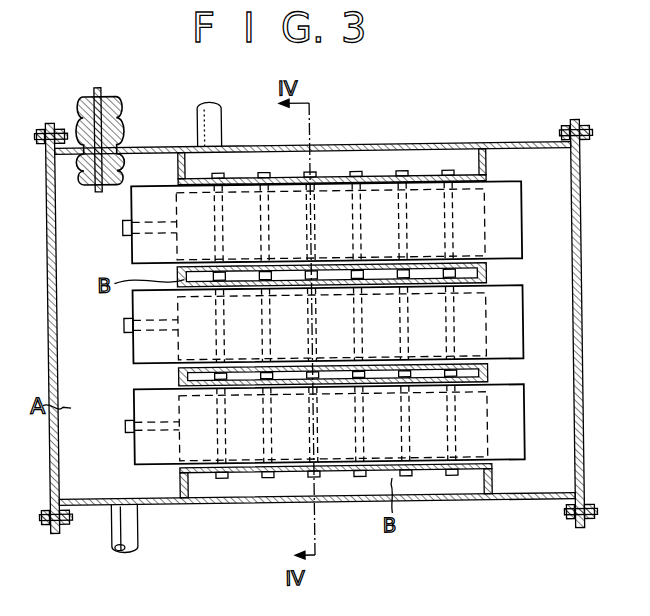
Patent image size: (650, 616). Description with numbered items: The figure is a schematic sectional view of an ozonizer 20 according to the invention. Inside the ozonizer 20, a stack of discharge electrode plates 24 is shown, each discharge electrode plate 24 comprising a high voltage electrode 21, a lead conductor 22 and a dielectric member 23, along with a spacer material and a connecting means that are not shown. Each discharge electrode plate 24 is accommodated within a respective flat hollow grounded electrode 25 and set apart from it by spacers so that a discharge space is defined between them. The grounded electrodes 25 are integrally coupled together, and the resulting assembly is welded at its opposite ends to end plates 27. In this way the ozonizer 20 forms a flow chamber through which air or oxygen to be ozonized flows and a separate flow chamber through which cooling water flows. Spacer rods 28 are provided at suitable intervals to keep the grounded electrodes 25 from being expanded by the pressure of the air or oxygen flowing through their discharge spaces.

The ozonizer 20 is at (518, 144).
The high voltage electrode 21 is at (486, 241).
The lead conductor 22 is at (124, 326).
The dielectric member 23 is at (513, 208).
The discharge electrode plate 24 is at (517, 323).
The flat hollow grounded electrode 25 is at (488, 373).
The end plate 27 is at (494, 478).
The spacer rod 28 is at (450, 172).